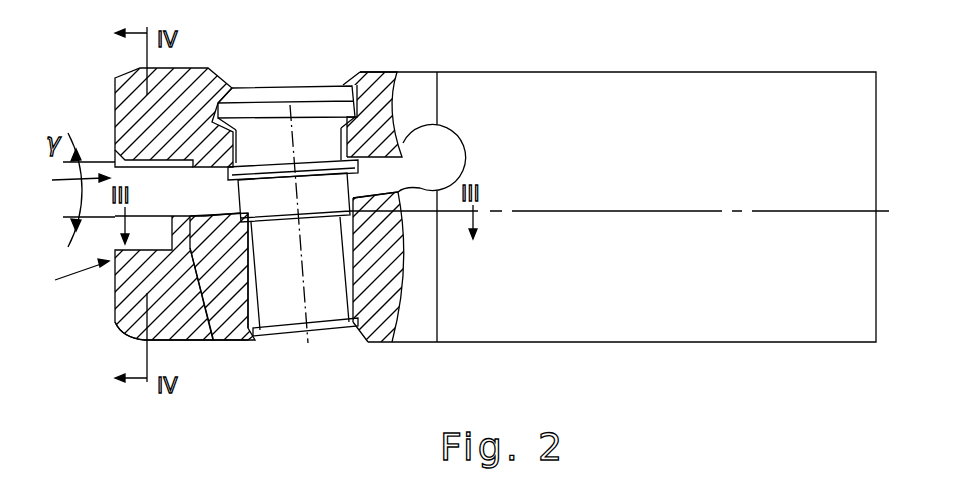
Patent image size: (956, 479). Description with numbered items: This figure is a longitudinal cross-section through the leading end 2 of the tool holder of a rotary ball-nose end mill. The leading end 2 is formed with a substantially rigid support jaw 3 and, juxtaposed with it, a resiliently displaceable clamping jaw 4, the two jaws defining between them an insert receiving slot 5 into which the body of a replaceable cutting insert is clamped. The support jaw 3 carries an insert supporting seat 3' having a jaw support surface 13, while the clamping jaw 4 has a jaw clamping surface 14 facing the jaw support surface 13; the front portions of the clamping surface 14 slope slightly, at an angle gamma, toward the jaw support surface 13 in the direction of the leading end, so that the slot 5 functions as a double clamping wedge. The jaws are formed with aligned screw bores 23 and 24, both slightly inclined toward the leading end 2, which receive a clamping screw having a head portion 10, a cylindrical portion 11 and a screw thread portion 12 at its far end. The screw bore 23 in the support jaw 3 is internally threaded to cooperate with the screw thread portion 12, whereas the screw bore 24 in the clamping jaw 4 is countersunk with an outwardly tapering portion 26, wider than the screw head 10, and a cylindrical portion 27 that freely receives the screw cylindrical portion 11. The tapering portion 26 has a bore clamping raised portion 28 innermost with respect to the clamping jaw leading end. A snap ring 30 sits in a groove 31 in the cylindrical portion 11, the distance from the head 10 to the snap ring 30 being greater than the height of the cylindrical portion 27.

The leading end 2 is at (68, 277).
The support jaw 3 is at (163, 291).
The insert supporting seat 3' is at (219, 299).
The clamping jaw 4 is at (175, 90).
The insert receiving slot 5 is at (71, 194).
The head portion 10 is at (320, 92).
The cylindrical portion 11 is at (268, 195).
The screw thread portion 12 is at (350, 273).
The jaw support surface 13 is at (117, 290).
The jaw clamping surface 14 is at (145, 157).
The screw bore 23 is at (336, 326).
The screw bore 24 is at (352, 118).
The outwardly tapering portion 26 is at (400, 130).
The cylindrical portion 27 is at (291, 105).
The bore clamping raised portion 28 is at (228, 128).
The snap ring 30 is at (357, 164).
The groove 31 is at (326, 178).